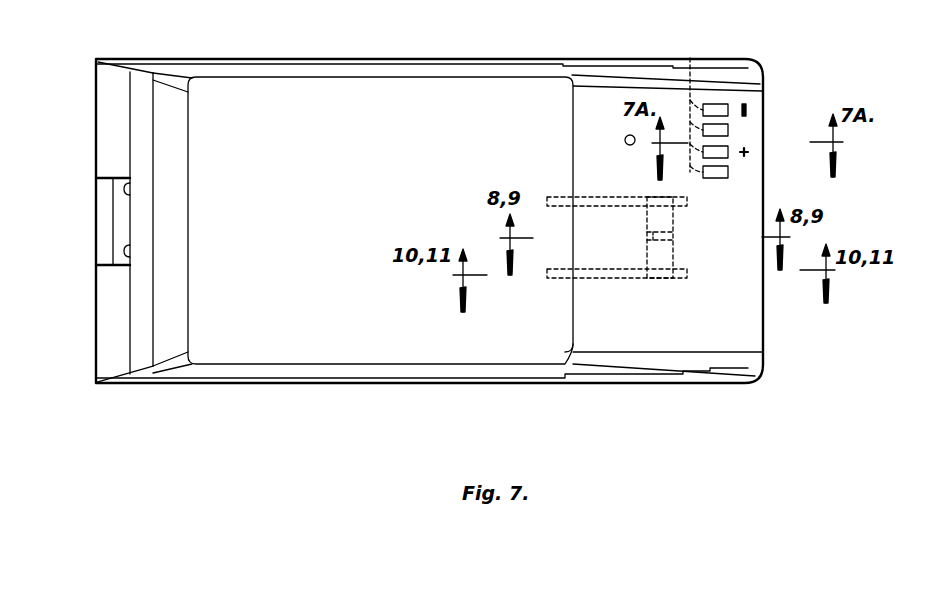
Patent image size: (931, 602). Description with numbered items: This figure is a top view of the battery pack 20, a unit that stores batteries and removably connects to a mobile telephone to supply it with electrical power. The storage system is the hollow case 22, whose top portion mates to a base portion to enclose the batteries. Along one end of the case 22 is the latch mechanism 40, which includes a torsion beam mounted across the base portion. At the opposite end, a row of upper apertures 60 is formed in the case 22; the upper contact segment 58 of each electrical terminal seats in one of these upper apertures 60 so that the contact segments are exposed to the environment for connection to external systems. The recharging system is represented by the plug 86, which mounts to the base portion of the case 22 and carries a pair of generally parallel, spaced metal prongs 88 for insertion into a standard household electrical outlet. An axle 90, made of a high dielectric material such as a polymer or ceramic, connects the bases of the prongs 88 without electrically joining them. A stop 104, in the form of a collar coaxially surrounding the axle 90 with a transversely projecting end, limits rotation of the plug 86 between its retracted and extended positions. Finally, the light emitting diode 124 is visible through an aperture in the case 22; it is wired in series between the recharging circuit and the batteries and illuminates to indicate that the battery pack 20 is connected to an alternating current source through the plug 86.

The battery pack 20 is at (140, 519).
The hollow case 22 is at (267, 405).
The latch mechanism 40 is at (95, 214).
The upper contact segment 58 is at (690, 58).
The upper aperture 60 is at (729, 108).
The plug 86 is at (609, 306).
The metal prongs 88 is at (592, 197).
The axle 90 is at (673, 216).
The stop 104 is at (673, 241).
The light emitting diode 124 is at (624, 139).